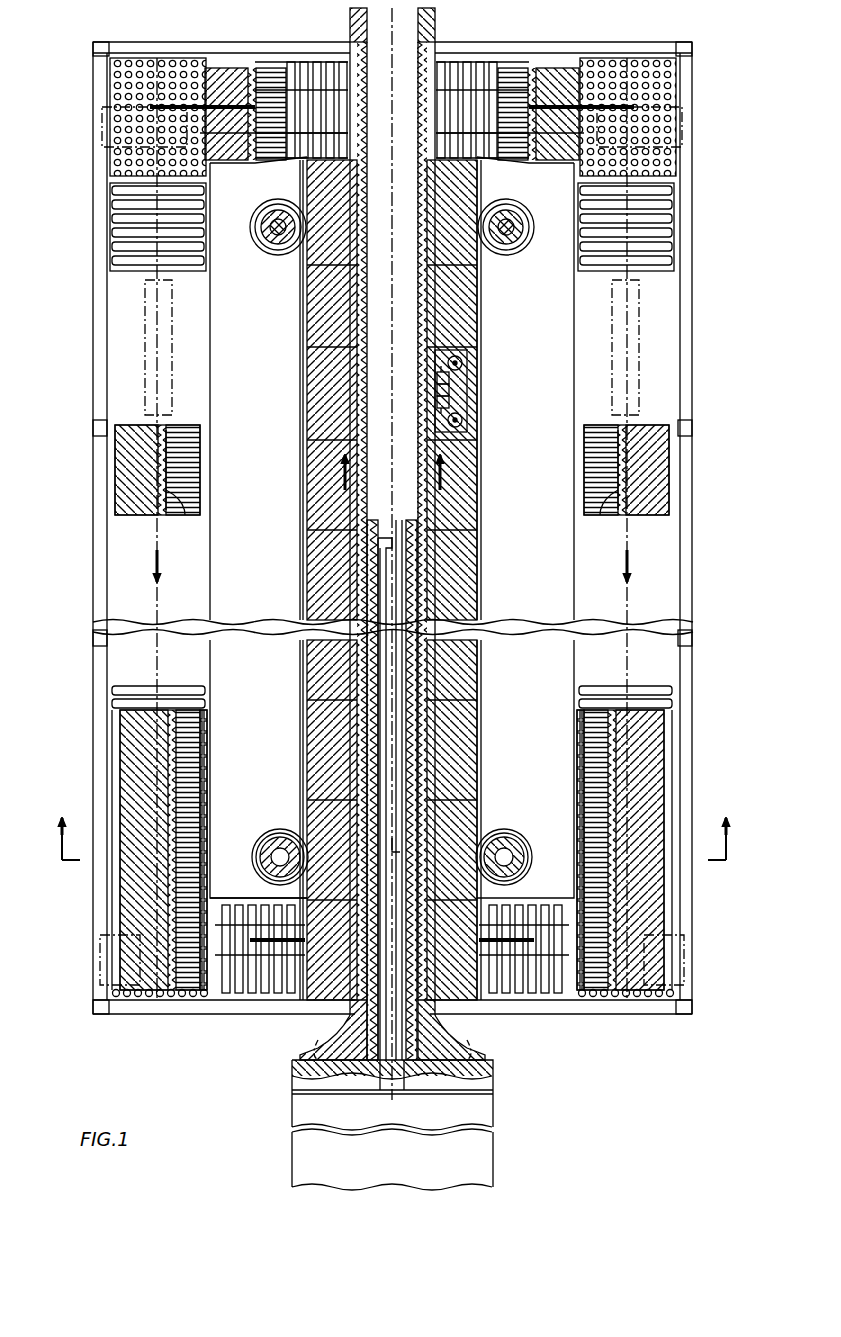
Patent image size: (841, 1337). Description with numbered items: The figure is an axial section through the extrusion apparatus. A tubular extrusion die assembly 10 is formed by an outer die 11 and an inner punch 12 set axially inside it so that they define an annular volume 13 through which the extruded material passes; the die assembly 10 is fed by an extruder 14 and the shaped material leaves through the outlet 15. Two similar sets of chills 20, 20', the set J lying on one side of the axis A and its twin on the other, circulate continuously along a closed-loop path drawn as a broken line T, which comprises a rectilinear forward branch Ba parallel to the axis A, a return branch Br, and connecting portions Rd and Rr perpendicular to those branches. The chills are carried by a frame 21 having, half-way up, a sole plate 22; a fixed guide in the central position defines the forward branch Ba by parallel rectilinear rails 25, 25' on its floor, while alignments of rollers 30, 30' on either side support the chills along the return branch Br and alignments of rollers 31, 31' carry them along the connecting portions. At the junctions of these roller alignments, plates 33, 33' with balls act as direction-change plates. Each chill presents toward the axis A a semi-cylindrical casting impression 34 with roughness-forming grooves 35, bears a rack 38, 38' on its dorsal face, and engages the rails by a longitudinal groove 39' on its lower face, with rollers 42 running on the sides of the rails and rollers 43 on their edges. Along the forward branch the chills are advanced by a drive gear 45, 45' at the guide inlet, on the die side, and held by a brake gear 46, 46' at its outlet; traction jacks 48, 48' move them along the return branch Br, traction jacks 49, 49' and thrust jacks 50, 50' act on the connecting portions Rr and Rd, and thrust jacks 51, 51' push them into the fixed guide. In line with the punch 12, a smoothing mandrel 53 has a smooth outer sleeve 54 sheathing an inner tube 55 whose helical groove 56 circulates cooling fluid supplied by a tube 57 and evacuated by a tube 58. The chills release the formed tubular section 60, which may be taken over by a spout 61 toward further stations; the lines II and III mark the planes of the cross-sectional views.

The tubular extrusion die assembly 10 is at (348, 1022).
The outer die 11 is at (355, 1015).
The inner punch 12 is at (436, 1052).
The annular volume 13 is at (430, 1000).
The extruder 14 is at (404, 1164).
The outlet of the die assembly 15 is at (352, 900).
The chill 20 is at (207, 561).
The chill 20' is at (578, 556).
The frame 21 is at (90, 1015).
The sole plate 22 is at (266, 586).
The rectilinear rail 25 is at (285, 393).
The rectilinear rail 25' is at (491, 393).
The alignment of rollers 30 is at (131, 227).
The alignment of rollers 30' is at (655, 225).
The alignment of rollers 31 is at (281, 530).
The alignment of rollers 31' is at (502, 527).
The plate with balls 33 is at (130, 528).
The plate with balls 33' is at (660, 527).
The casting impression 34 is at (178, 450).
The grooves 35 is at (180, 512).
The rack 38 is at (210, 580).
The rack 38' is at (571, 580).
The groove 39' is at (493, 389).
The rollers 42 is at (464, 360).
The rollers 43 is at (436, 380).
The drive gear 45 is at (280, 841).
The drive gear 45' is at (504, 841).
The brake gear 46 is at (277, 240).
The brake gear 46' is at (506, 240).
The jack 48 is at (142, 347).
The jack 48' is at (644, 347).
The jack 49 is at (693, 958).
The jack 49' is at (90, 960).
The jack 50 is at (669, 114).
The jack 50' is at (115, 116).
The jack 51 is at (392, 1095).
The jack 51' is at (472, 1098).
The smoothing mandrel 53 is at (372, 518).
The smooth outer sleeve 54 is at (408, 518).
The inner tube 55 is at (412, 612).
The helical groove 56 is at (420, 594).
The supply tube 57 is at (380, 1080).
The evacuation tube 58 is at (404, 1080).
The tubular section 60 is at (435, 40).
The spout 61 is at (350, 30).
The axis of the die assembly A is at (388, 554).
The closed loop path T is at (103, 529).
The connecting portion Rd is at (228, 105).
The return branch Br is at (152, 572).
The forward branch Ba is at (340, 478).
The connecting portion Rr is at (272, 950).
The set of chills J is at (186, 1036).
The section line II is at (387, 824).
The section line III is at (390, 832).